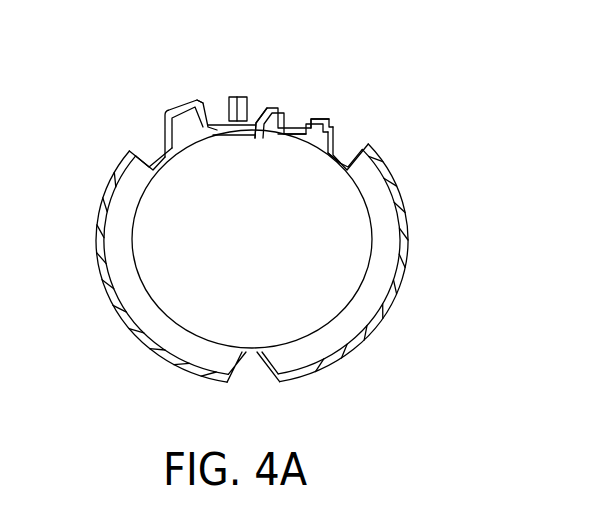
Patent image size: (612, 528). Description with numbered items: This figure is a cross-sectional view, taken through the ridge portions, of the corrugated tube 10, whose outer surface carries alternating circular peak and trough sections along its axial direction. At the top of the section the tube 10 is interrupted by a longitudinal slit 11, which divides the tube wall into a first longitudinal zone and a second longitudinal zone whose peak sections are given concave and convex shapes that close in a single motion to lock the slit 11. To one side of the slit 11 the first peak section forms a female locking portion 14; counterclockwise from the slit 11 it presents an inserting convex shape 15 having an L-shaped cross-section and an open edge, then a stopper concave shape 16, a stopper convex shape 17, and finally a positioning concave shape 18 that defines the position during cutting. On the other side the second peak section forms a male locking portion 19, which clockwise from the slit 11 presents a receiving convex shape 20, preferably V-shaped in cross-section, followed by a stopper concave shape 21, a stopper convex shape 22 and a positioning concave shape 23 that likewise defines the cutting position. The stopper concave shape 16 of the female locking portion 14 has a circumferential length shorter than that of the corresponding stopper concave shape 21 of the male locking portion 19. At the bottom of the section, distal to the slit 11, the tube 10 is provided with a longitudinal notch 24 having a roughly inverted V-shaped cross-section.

The corrugated tube 10 is at (426, 240).
The longitudinal slit 11 is at (255, 108).
The female locking portion 14 is at (201, 84).
The inserting convex shape 15 is at (237, 100).
The stopper concave shape 16 is at (215, 134).
The stopper convex shape 17 is at (190, 107).
The positioning concave shape 18 is at (153, 147).
The male locking portion 19 is at (310, 106).
The receiving convex shape 20 is at (276, 106).
The stopper concave shape 21 is at (287, 142).
The stopper convex shape 22 is at (333, 125).
The positioning concave shape 23 is at (334, 166).
The longitudinal notch 24 is at (250, 352).